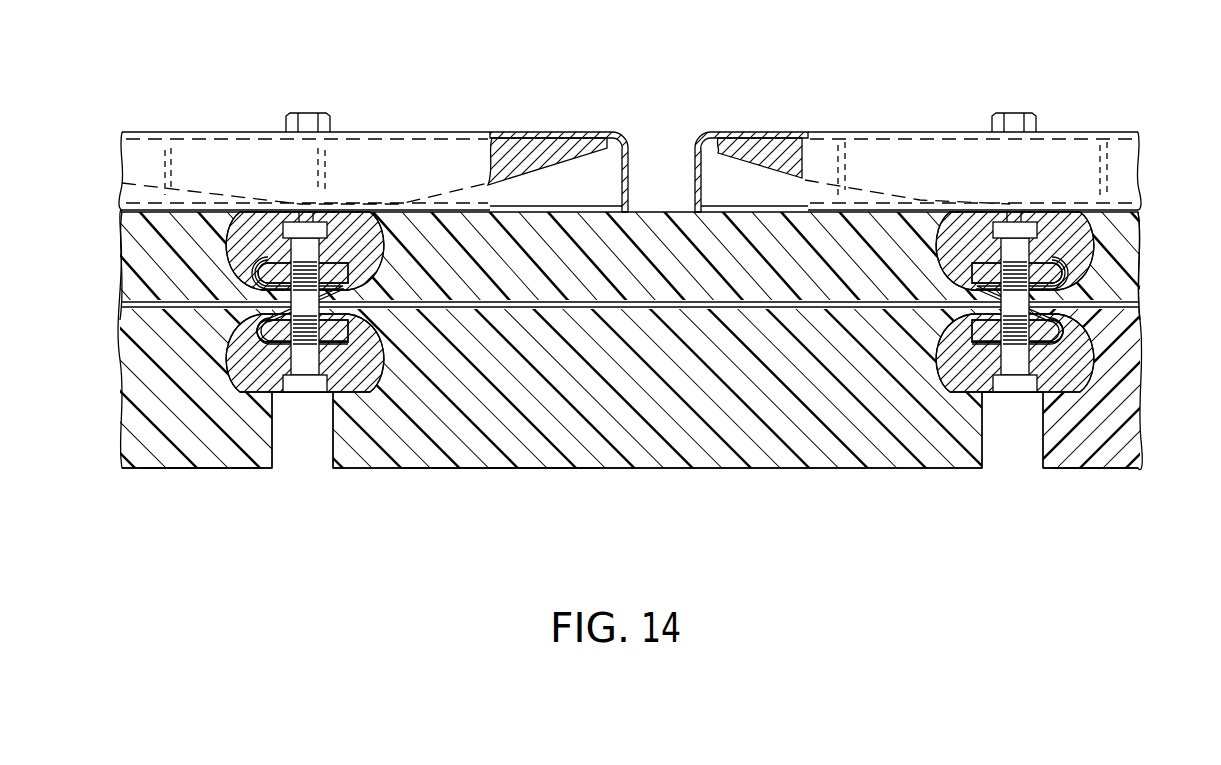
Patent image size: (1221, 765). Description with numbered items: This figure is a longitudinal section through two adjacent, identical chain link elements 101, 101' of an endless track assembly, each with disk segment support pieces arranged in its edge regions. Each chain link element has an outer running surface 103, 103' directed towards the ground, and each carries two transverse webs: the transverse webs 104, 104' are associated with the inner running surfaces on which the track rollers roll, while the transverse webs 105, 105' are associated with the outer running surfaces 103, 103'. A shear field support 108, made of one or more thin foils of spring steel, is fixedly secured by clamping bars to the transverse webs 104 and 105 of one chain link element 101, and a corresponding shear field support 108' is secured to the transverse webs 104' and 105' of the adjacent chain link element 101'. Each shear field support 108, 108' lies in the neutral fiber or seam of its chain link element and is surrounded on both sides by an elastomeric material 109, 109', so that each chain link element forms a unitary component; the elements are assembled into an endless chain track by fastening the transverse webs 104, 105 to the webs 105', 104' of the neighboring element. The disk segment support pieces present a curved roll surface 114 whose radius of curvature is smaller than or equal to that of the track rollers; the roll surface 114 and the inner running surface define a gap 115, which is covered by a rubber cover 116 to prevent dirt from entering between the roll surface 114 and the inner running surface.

The chain link element 101 is at (610, 302).
The chain link element 101' is at (636, 244).
The outer running surface 103 is at (765, 501).
The outer running surface 103' is at (200, 501).
The transverse web 104 is at (1009, 252).
The transverse web 104' is at (288, 252).
The transverse web 105 is at (304, 422).
The transverse web 105' is at (1015, 423).
The shear field support 108 is at (937, 331).
The shear field support 108' is at (362, 341).
The elastomeric material 109 is at (657, 489).
The elastomeric material 109' is at (641, 433).
The roll surface 114 is at (649, 172).
The gap 115 is at (548, 203).
The rubber cover 116 is at (442, 148).